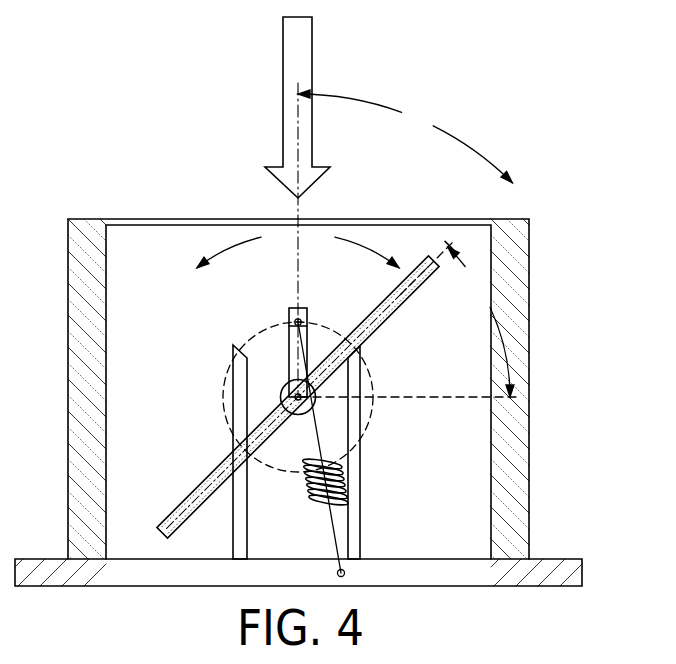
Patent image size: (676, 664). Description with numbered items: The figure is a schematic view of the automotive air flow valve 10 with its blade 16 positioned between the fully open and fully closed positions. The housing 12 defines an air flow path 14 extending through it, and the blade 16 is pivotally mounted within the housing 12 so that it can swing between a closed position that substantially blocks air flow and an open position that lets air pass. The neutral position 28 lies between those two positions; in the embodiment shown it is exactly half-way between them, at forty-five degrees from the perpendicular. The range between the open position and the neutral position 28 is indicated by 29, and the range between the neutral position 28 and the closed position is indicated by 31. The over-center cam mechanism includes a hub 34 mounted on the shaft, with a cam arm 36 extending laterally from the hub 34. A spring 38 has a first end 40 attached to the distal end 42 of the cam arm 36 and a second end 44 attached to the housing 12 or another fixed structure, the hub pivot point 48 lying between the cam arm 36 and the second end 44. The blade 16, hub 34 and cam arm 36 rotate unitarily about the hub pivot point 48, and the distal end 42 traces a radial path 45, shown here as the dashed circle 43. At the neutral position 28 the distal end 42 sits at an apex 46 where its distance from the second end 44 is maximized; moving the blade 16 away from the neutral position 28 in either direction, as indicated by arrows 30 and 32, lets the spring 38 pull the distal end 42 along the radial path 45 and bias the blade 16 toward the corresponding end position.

The automotive air flow valve 10 is at (87, 179).
The housing 12 is at (83, 257).
The air flow path 14 is at (283, 62).
The blade 16 is at (196, 492).
The neutral position 28 is at (518, 193).
The range between open position and neutral position 29 is at (405, 136).
The arrow indicating rotation toward a position 30 is at (366, 245).
The range between neutral position and closed position 31 is at (481, 322).
The arrow indicating rotation toward a position 32 is at (222, 250).
The hub 34 is at (283, 388).
The cam arm 36 is at (309, 316).
The spring 38 is at (306, 491).
The first end of spring 40 is at (237, 304).
The distal end of cam arm 42 is at (237, 304).
The apex 46 is at (291, 312).
The pin travel path 43 is at (371, 378).
The second end of spring 44 is at (344, 574).
The radial path 45 is at (236, 346).
The hub pivot point 48 is at (257, 426).